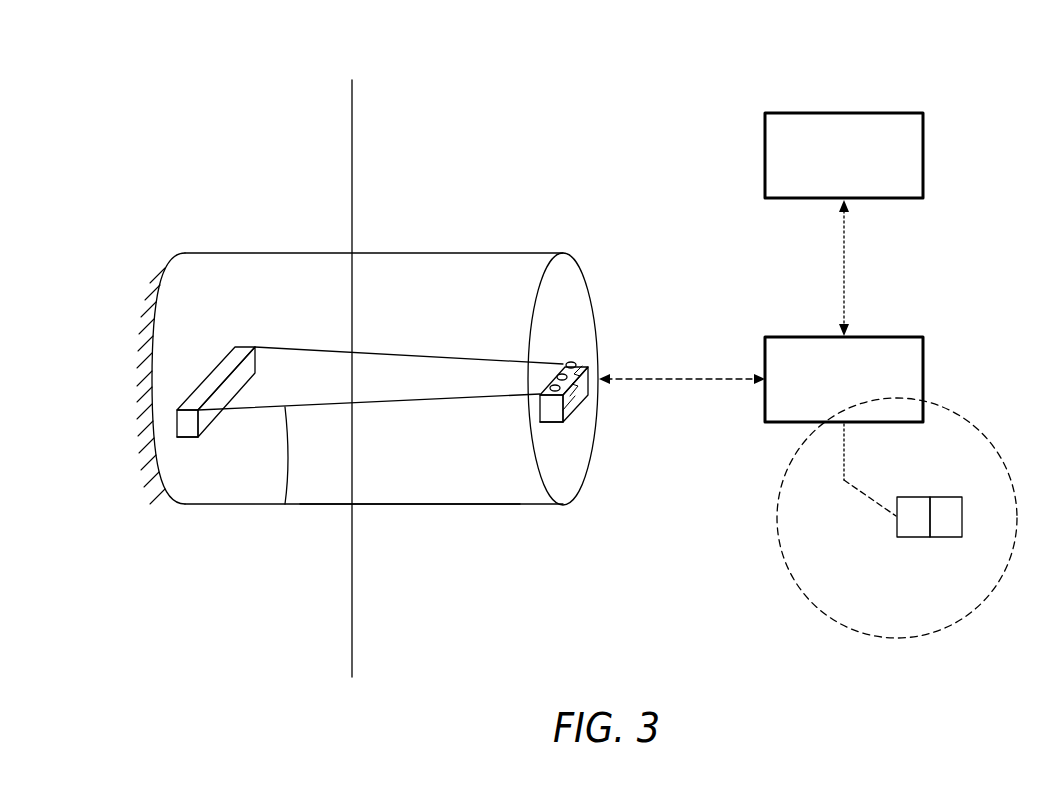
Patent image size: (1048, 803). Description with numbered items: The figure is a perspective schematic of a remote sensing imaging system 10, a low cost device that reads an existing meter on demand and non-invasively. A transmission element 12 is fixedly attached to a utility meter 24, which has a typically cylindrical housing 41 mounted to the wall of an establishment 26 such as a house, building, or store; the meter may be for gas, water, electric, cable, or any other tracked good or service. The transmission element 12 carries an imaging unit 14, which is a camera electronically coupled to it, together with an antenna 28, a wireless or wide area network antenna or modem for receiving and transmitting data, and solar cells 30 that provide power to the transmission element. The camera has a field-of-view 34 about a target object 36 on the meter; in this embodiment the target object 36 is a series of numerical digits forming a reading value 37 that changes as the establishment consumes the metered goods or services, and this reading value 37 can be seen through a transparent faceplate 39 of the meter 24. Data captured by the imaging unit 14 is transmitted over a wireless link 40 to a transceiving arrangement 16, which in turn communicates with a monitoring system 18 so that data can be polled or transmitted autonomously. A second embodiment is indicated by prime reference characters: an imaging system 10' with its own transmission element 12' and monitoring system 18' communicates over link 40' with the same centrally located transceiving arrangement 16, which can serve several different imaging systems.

The remote sensing imaging system 10 is at (567, 48).
The transmission element 12 is at (594, 385).
The imaging unit 14 is at (552, 412).
The transceiving arrangement 16 is at (776, 337).
The monitoring system 18 is at (832, 144).
The utility meter 24 is at (575, 230).
The establishment 26 is at (354, 168).
The antenna 28 is at (586, 398).
The solar cells 30 is at (572, 362).
The field-of-view 34 is at (285, 504).
The target object 36 is at (254, 315).
The reading value 37 is at (200, 430).
The transparent faceplate 39 is at (572, 498).
The wireless link 40 is at (682, 397).
The housing 41 is at (440, 505).
The imaging system 10' is at (909, 518).
The transmission element 12' is at (913, 537).
The monitoring system 18' is at (946, 537).
The alternative link 40' is at (870, 480).